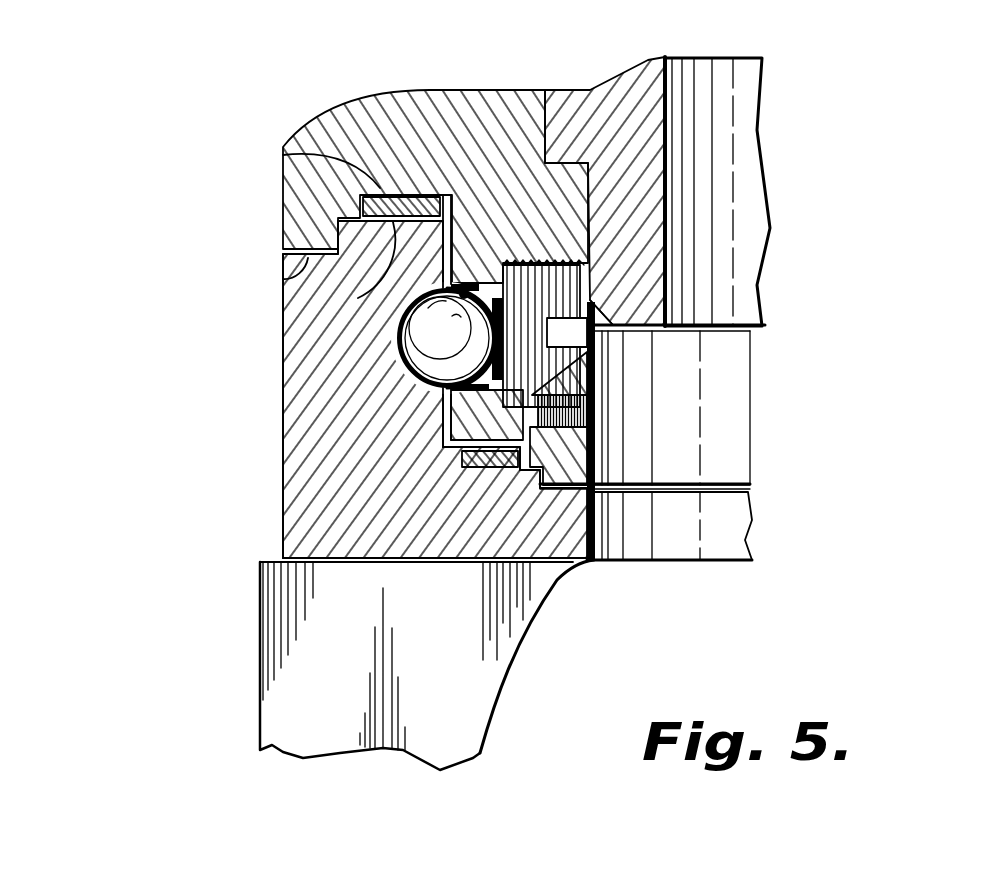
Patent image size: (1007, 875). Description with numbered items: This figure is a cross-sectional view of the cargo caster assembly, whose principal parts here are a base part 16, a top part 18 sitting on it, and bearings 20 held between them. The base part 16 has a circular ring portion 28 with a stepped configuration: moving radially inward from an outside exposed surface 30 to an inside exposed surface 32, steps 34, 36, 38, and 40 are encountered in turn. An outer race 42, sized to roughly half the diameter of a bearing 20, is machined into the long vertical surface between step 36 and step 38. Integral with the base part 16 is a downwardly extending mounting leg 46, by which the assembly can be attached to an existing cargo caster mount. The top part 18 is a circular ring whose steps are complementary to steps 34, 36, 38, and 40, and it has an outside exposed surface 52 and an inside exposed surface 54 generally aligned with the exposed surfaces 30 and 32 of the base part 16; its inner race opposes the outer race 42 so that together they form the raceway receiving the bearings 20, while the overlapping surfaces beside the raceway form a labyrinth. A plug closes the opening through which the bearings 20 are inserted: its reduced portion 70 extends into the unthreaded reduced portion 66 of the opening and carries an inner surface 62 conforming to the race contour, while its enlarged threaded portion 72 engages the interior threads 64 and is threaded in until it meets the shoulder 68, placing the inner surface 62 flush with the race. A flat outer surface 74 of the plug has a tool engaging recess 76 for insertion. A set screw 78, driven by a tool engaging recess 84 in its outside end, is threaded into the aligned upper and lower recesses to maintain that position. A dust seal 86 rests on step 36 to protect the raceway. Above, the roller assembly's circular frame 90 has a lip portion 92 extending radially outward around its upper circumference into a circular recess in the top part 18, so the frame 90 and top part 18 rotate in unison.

The base part 16 is at (217, 527).
The top part 18 is at (350, 92).
The bearings 20 is at (400, 366).
The circular ring portion 28 is at (440, 547).
The outside exposed surface 30 is at (445, 392).
The inside exposed surface 32 is at (598, 560).
The step 34 is at (283, 280).
The step 36 is at (385, 286).
The step 38 is at (520, 640).
The step 40 is at (563, 573).
The outer race 42 is at (398, 330).
The mounting leg 46 is at (268, 668).
The outside exposed surface 52 is at (283, 187).
The inside exposed surface 54 is at (595, 475).
The inner surface 62 is at (452, 195).
The interior threads 64 is at (540, 265).
The unthreaded reduced portion 66 is at (468, 285).
The shoulder 68 is at (445, 427).
The reduced portion 70 is at (445, 411).
The enlarged threaded portion 72 is at (592, 280).
The flat outer surface 74 is at (593, 358).
The tool engaging recess 76 is at (596, 330).
The set screw 78 is at (593, 440).
The tool engaging recess 84 is at (590, 408).
The dust seal 86 is at (283, 153).
The frame 90 is at (737, 62).
The lip portion 92 is at (568, 118).